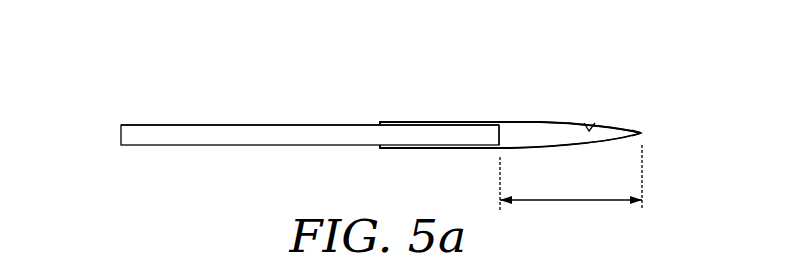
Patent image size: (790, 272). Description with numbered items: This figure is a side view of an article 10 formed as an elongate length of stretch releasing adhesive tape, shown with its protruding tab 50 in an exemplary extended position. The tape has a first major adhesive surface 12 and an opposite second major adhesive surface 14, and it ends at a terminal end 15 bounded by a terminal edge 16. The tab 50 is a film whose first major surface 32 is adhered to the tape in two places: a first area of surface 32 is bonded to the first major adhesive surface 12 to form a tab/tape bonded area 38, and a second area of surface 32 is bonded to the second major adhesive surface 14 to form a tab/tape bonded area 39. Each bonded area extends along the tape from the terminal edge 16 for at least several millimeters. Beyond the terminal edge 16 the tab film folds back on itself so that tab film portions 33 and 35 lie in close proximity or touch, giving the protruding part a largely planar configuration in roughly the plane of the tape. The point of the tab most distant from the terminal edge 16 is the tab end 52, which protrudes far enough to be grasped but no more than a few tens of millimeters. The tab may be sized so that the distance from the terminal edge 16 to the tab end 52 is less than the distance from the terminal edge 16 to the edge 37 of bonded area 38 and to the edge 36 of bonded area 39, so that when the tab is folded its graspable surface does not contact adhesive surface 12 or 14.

The article 10 is at (134, 84).
The first major adhesive surface 12 is at (207, 145).
The second major adhesive surface 14 is at (207, 125).
The terminal end 15 is at (483, 106).
The terminal edge 16 is at (503, 134).
The first major surface 32 is at (592, 122).
The tab film portion 33 is at (558, 147).
The tab film portion 35 is at (558, 122).
The edge of tab/tape bonded area 36 is at (380, 122).
The edge of tab/tape bonded area 37 is at (380, 148).
The tab/tape bonded area 38 is at (400, 148).
The tab/tape bonded area 39 is at (400, 122).
The tab 50 is at (642, 77).
The tab end 52 is at (642, 133).